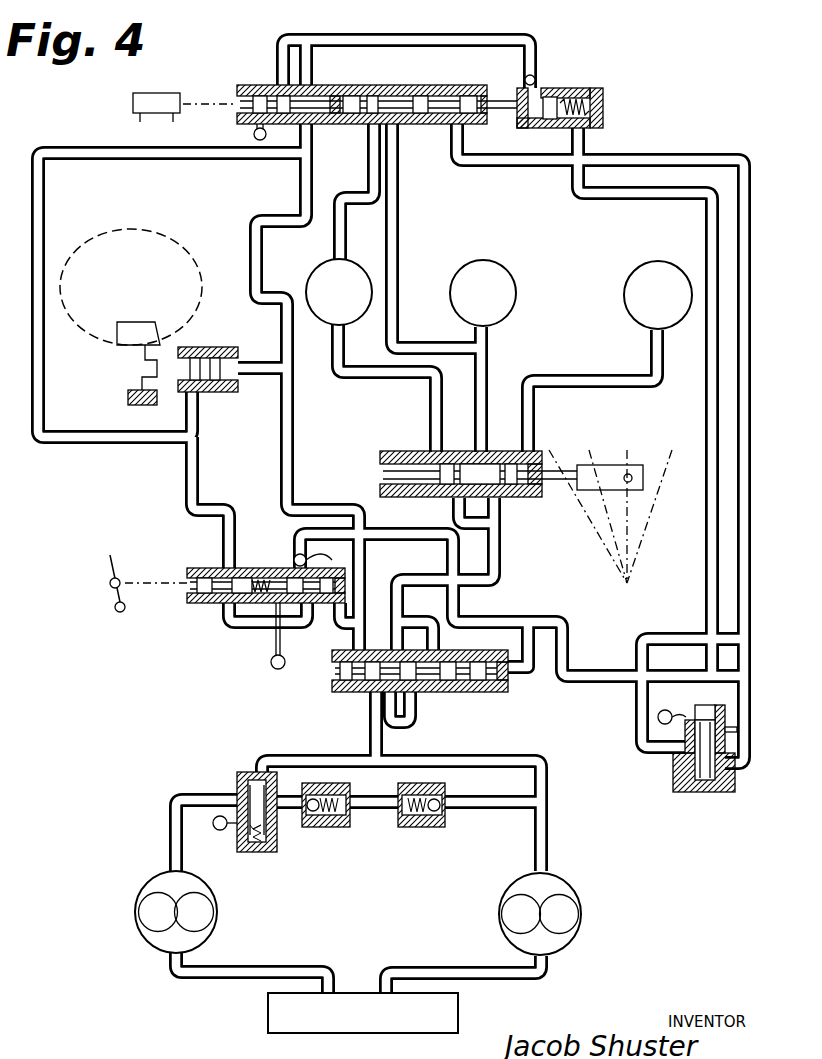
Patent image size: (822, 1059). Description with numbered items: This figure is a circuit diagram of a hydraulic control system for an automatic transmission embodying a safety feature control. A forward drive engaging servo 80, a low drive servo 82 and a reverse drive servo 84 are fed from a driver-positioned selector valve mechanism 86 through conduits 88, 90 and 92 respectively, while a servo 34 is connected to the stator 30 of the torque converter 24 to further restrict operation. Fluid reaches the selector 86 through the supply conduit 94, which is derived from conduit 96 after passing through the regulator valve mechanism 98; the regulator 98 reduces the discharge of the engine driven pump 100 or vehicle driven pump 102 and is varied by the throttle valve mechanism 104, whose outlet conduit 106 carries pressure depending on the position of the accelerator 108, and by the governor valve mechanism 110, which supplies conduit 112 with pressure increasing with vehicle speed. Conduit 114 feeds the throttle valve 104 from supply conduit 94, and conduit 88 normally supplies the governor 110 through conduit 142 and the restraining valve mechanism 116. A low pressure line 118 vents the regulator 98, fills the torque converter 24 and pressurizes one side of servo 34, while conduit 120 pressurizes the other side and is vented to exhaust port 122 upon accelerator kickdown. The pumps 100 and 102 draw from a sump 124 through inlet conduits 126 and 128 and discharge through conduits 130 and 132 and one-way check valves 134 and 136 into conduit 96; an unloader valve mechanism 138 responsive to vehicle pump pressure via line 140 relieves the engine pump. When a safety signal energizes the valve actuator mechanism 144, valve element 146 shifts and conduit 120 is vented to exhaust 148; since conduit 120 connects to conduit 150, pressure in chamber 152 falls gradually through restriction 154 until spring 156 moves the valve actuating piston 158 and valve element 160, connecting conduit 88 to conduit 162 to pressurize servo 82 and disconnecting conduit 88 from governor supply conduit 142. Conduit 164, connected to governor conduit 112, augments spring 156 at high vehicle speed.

The torque converter 24 is at (120, 231).
The stator 30 is at (135, 322).
The servo 34 is at (228, 397).
The forward drive engaging servo 80 is at (493, 262).
The low drive servo 82 is at (330, 262).
The reverse drive servo 84 is at (669, 262).
The selector valve mechanism 86 is at (513, 524).
The conduit 88 is at (488, 375).
The conduit 90 is at (378, 380).
The conduit 92 is at (588, 388).
The supply conduit 94 is at (501, 554).
The line conduit 96 is at (384, 748).
The regulator valve mechanism 98 is at (352, 704).
The engine driven pump 100 is at (142, 940).
The vehicle driven pump 102 is at (566, 946).
The throttle valve mechanism 104 is at (247, 617).
The outlet conduit 106 is at (420, 528).
The accelerator 108 is at (118, 568).
The governor valve mechanism 110 is at (664, 767).
The conduit 112 is at (608, 650).
The conduit 114 is at (334, 629).
The restraining valve mechanism 116 is at (355, 99).
The low pressure line 118 is at (292, 480).
The conduit 120 is at (150, 162).
The exhaust port 122 is at (222, 612).
The sump 124 is at (433, 1033).
The pump inlet conduit 126 is at (256, 965).
The pump inlet conduit 128 is at (446, 966).
The pump discharge conduit 130 is at (188, 793).
The pump discharge conduit 132 is at (549, 845).
The one-way check valve 134 is at (326, 837).
The one-way check valve 136 is at (423, 836).
The unloader valve mechanism 138 is at (265, 860).
The line 140 is at (457, 760).
The conduit 142 is at (718, 160).
The valve actuator mechanism 144 is at (162, 93).
The valve element 146 is at (276, 90).
The exhaust 148 is at (252, 134).
The conduit 150 is at (425, 40).
The chamber 152 is at (550, 105).
The restriction 154 is at (526, 72).
The spring 156 is at (592, 96).
The valve actuating piston 158 is at (553, 98).
The valve element 160 is at (395, 98).
The conduit 162 is at (366, 158).
The conduit 164 is at (705, 401).